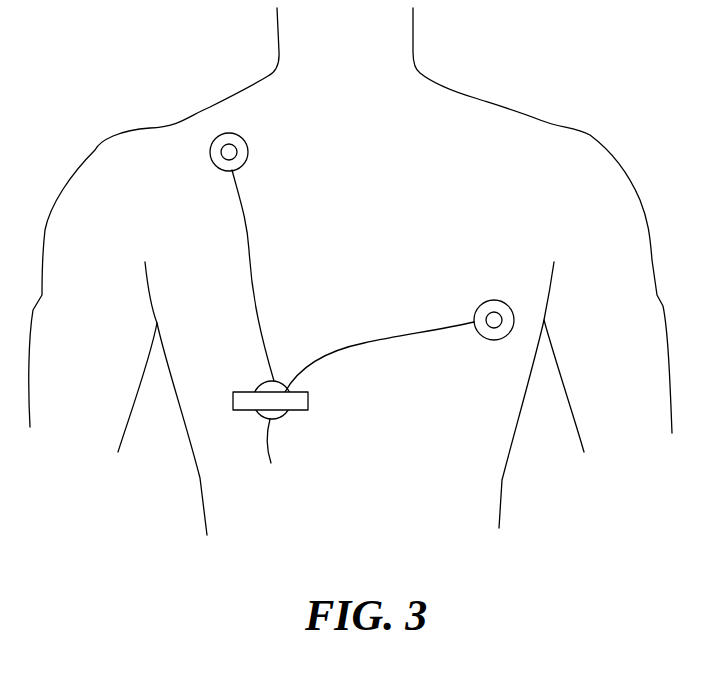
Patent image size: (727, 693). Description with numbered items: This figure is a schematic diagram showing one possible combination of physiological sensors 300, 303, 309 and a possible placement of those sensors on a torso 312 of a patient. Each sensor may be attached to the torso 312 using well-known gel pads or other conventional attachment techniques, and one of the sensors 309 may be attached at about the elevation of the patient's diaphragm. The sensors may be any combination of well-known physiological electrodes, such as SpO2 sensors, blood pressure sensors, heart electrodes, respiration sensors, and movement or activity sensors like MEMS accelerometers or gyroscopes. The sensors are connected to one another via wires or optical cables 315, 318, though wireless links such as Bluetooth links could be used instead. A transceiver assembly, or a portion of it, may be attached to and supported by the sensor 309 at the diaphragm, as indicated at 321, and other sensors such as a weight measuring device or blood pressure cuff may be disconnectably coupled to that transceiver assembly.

The physiological sensor 300 is at (237, 150).
The physiological sensor 303 is at (494, 312).
The physiological sensor 309 is at (274, 453).
The torso 312 is at (502, 505).
The wire or optical cable 315 is at (250, 243).
The wire or optical cable 318 is at (436, 335).
The transceiver assembly attachment 321 is at (308, 400).